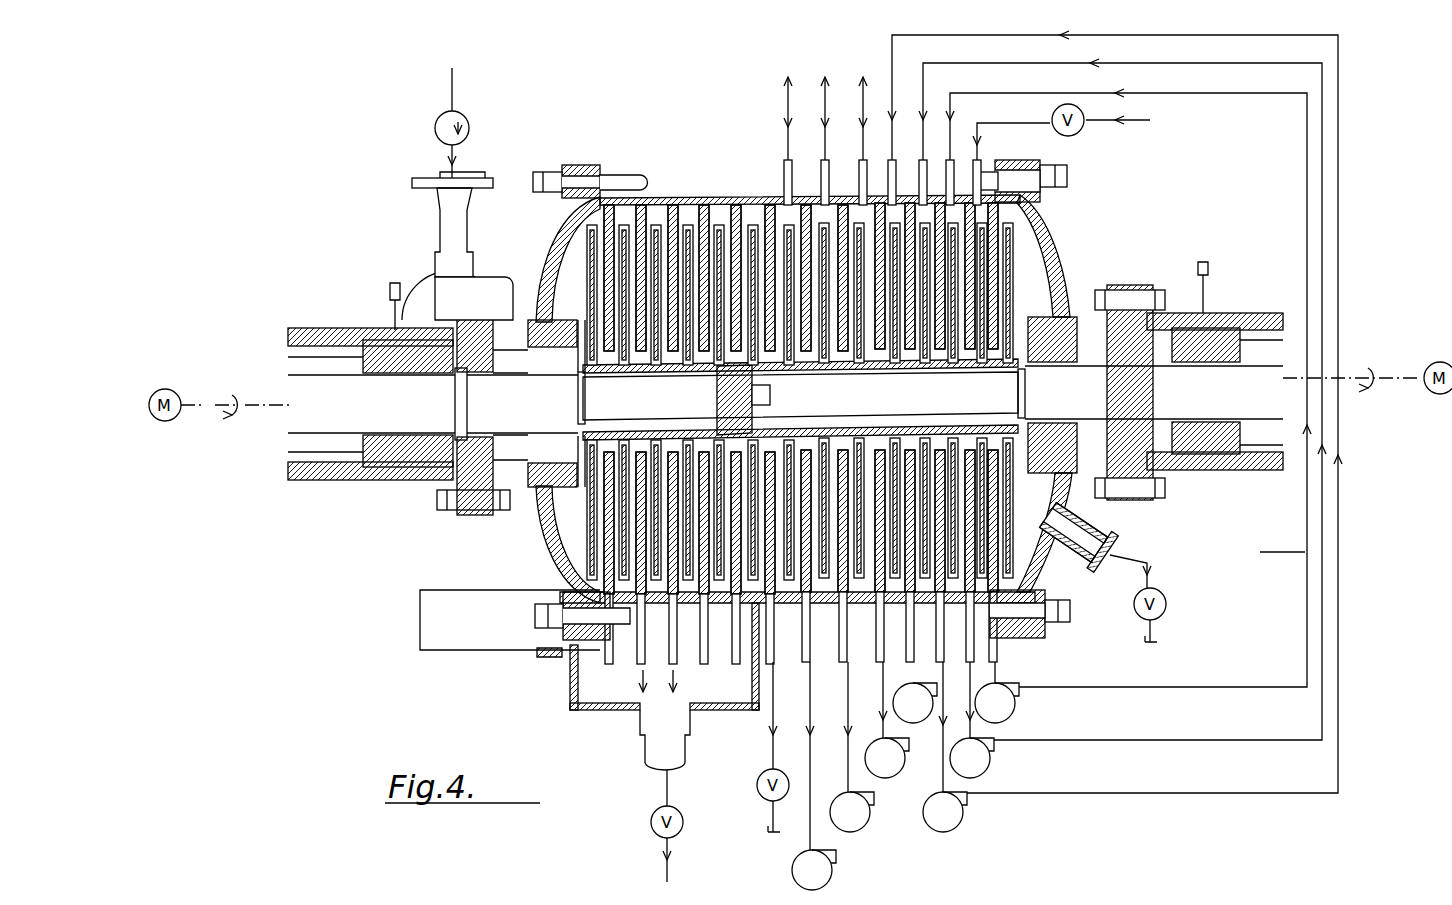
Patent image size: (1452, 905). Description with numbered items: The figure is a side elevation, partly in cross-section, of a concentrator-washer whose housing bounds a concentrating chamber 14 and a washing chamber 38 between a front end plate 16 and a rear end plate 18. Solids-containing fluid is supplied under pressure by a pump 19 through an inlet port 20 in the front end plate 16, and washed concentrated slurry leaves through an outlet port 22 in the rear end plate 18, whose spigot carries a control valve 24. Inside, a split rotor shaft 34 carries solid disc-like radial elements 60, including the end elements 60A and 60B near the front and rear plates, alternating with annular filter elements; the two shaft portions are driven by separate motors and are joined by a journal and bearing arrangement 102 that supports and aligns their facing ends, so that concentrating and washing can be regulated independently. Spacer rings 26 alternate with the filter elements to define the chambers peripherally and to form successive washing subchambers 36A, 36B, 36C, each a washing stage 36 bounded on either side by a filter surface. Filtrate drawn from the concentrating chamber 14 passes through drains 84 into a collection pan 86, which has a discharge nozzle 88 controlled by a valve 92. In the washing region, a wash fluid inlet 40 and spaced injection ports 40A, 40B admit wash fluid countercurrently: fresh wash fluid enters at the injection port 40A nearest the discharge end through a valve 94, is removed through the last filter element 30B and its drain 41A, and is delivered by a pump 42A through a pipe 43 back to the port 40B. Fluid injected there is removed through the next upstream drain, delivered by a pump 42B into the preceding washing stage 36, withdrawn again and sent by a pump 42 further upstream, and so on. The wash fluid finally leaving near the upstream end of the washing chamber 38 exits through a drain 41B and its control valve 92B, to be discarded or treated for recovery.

The concentrating chamber 14 is at (650, 210).
The front end plate 16 is at (552, 245).
The rear end plate 18 is at (1055, 278).
The pump 19 is at (468, 118).
The inlet port 20 is at (552, 290).
The outlet port 22 is at (1115, 545).
The control valve 24 is at (1168, 598).
The spacer rings 26 is at (778, 205).
The filter element 30B is at (990, 265).
The rotor shaft 34 is at (664, 410).
The washing stage 36 is at (960, 208).
The washing subchamber 36A is at (795, 650).
The washing subchamber 36B is at (833, 621).
The washing subchamber 36C is at (869, 594).
The washing chamber 38 is at (768, 203).
The wash fluid inlet 40 is at (920, 162).
The injection port 40A is at (980, 160).
The injection port 40B is at (955, 160).
The drain 41A is at (1000, 656).
The drain 41B is at (768, 668).
The pump 42 is at (965, 818).
The pump 42A is at (1020, 710).
The pump 42B is at (996, 770).
The pipe 43 is at (1268, 553).
The radial elements 60 is at (718, 223).
The radial element 60A is at (636, 182).
The radial element 60B is at (1010, 245).
The drains 84 is at (610, 662).
The collection pan 86 is at (570, 705).
The discharge nozzle 88 is at (645, 750).
The valve 92 is at (651, 812).
The control valve 92B is at (757, 783).
The valve 94 is at (1078, 133).
The journal and bearing arrangement 102 is at (770, 405).